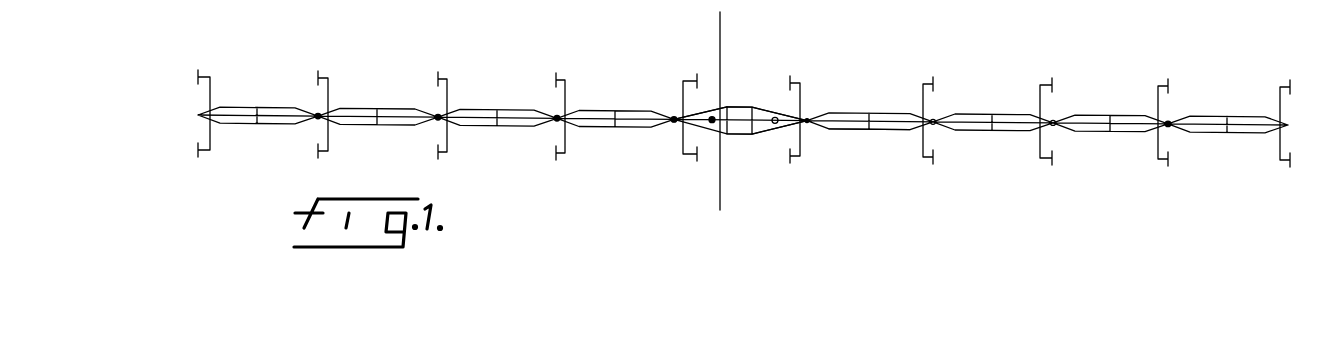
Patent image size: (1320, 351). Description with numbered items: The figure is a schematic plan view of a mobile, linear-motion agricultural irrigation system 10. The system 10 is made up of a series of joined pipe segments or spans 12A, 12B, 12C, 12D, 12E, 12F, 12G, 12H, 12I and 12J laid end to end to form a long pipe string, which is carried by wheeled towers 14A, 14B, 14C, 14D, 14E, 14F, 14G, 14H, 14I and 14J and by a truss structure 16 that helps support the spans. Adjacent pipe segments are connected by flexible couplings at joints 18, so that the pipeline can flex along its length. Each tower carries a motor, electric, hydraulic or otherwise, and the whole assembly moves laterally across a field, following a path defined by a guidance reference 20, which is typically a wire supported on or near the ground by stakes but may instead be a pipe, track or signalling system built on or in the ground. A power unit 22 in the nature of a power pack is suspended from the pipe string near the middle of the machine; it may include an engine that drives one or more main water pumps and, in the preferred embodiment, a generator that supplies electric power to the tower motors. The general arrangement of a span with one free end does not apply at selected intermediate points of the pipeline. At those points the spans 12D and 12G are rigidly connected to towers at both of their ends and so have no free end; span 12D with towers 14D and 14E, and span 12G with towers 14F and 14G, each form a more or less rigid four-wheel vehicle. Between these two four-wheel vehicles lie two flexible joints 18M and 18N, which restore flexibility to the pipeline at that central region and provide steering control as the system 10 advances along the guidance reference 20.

The mobile agricultural irrigation system 10 is at (622, 158).
The pipe segment or span 12A is at (288, 93).
The pipe segment or span 12B is at (408, 93).
The pipe segment or span 12C is at (524, 94).
The pipe segment or span 12D is at (648, 95).
The pipe segment or span 12E is at (728, 124).
The pipe segment or span 12F is at (778, 88).
The pipe segment or span 12G is at (845, 114).
The pipe segment or span 12H is at (1015, 95).
The pipe segment or span 12I is at (1130, 97).
The pipe segment or span 12J is at (1241, 120).
The wheeled tower 14A is at (208, 151).
The wheeled tower 14B is at (328, 152).
The wheeled tower 14C is at (440, 159).
The wheeled tower 14D is at (561, 78).
The wheeled tower 14E is at (683, 155).
The wheeled tower 14F is at (800, 157).
The wheeled tower 14G is at (923, 158).
The wheeled tower 14H is at (1045, 85).
The wheeled tower 14I is at (1158, 159).
The wheeled tower 14J is at (1280, 160).
The truss structure 16 is at (858, 132).
The joint 18 is at (434, 120).
The flexible joint 18M is at (712, 116).
The flexible joint 18N is at (775, 124).
The guidance reference 20 is at (723, 32).
The power unit 22 is at (730, 106).